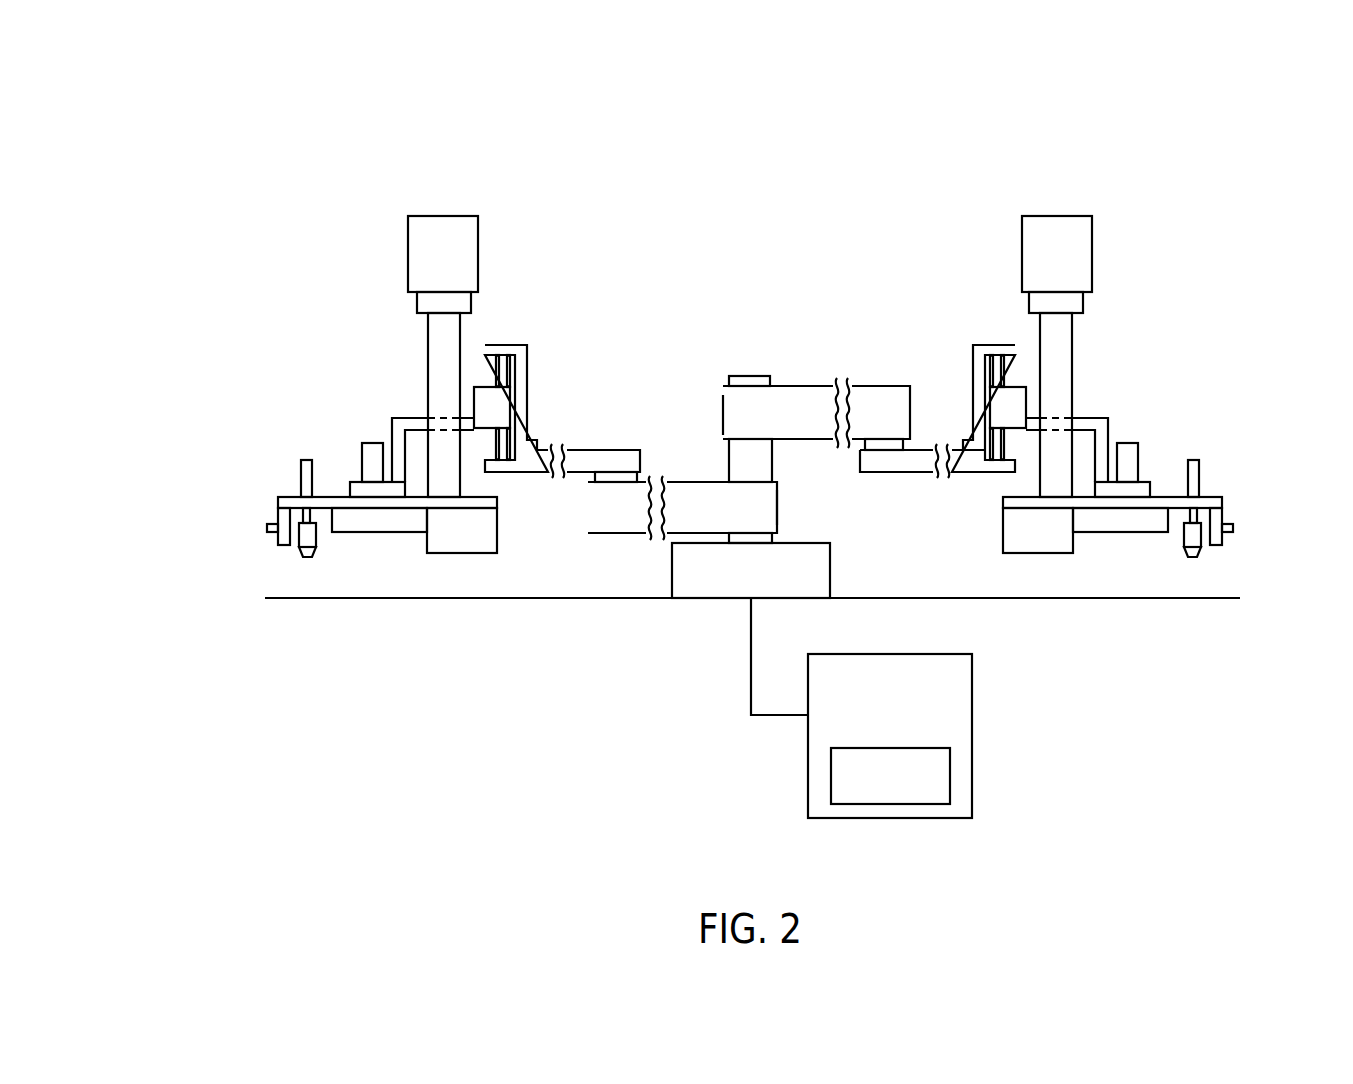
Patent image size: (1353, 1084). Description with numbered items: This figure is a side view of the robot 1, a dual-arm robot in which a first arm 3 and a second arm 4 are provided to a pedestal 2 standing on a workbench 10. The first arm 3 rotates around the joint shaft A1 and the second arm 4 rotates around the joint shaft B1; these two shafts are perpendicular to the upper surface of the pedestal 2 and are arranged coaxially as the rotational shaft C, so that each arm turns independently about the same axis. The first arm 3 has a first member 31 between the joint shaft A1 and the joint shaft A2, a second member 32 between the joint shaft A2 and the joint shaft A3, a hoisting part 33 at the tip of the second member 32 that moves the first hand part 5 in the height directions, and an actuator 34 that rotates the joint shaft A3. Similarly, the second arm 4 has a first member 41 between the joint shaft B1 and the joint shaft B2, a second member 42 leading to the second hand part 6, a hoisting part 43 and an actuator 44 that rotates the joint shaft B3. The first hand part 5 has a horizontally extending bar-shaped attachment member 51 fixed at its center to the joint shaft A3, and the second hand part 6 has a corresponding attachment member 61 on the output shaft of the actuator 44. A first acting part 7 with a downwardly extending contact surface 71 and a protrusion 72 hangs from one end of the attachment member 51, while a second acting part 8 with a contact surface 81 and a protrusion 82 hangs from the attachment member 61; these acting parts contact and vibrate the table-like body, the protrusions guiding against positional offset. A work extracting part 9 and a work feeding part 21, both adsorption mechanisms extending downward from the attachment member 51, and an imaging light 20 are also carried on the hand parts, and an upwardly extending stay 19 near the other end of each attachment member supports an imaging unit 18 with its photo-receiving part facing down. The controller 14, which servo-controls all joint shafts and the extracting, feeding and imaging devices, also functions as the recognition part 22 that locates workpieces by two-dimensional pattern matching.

The robot 1 is at (784, 136).
The pedestal 2 is at (712, 582).
The first arm 3 is at (885, 312).
The second arm 4 is at (647, 372).
The first hand part 5 is at (1188, 432).
The second hand part 6 is at (312, 432).
The first acting part 7 is at (1238, 518).
The second acting part 8 is at (262, 518).
The work extracting part 9 is at (307, 557).
The workbench 10 is at (905, 605).
The controller 14 is at (972, 702).
The imaging unit 18 is at (416, 250).
The stay 19 is at (433, 345).
The imaging light 20 is at (402, 523).
The work feeding part 21 is at (463, 543).
The recognition part 22 is at (950, 773).
The first member 31 is at (800, 397).
The second member 32 is at (918, 463).
The hoisting part 33 is at (1019, 390).
The actuator 34 is at (1127, 450).
The first member 41 is at (683, 492).
The second member 42 is at (585, 450).
The hoisting part 43 is at (481, 390).
The actuator 44 is at (373, 450).
The attachment member 51 is at (1178, 503).
The attachment member 61 is at (322, 503).
The contact surface 71 is at (1217, 545).
The protrusion 72 is at (1233, 529).
The contact surface 81 is at (283, 545).
The protrusion 82 is at (267, 529).
The joint shaft A1 is at (722, 420).
The joint shaft A2 is at (882, 382).
The joint shaft A3 is at (1123, 510).
The joint shaft B1 is at (777, 505).
The joint shaft B2 is at (621, 447).
The joint shaft B3 is at (377, 510).
The rotational shaft C is at (750, 375).